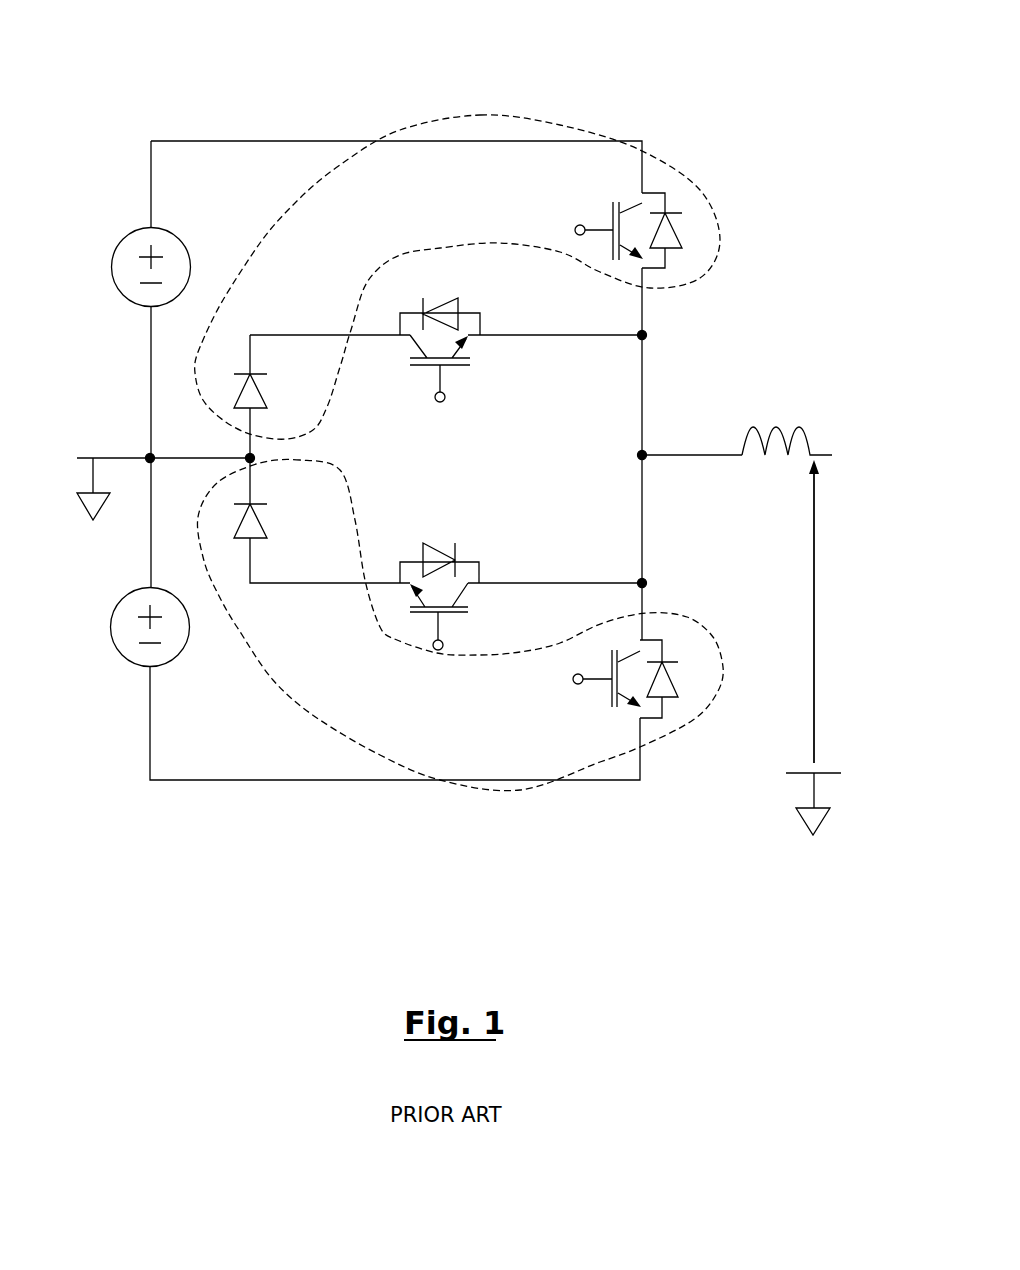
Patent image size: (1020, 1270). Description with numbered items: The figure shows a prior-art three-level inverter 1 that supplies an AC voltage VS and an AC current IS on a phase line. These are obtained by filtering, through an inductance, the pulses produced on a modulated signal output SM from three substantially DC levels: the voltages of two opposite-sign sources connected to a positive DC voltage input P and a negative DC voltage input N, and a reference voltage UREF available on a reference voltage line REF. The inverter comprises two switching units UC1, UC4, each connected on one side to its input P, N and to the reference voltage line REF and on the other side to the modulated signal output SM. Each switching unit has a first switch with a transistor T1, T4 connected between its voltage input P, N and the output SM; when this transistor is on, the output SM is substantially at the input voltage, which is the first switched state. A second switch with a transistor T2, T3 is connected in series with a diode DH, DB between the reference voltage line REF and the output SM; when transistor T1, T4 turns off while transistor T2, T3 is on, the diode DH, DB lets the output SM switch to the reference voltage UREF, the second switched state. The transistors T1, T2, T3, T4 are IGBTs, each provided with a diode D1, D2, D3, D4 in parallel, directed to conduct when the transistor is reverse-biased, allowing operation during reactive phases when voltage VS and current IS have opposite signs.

The three-level inverter 1 is at (686, 96).
The positive DC voltage input P is at (396, 153).
The negative DC voltage input N is at (395, 723).
The reference voltage UREF is at (166, 447).
The reference voltage line REF is at (455, 661).
The AC voltage VS is at (827, 618).
The modulated signal output SM is at (645, 452).
The AC current IS is at (796, 415).
The diode DH is at (263, 396).
The diode DB is at (322, 520).
The transistor T1 is at (609, 231).
The diode D1 is at (674, 230).
The transistor T2 is at (443, 368).
The diode D2 is at (440, 304).
The transistor T3 is at (443, 616).
The diode D3 is at (439, 549).
The transistor T4 is at (607, 678).
The diode D4 is at (673, 679).
The switching unit UC1 is at (410, 130).
The switching unit UC4 is at (440, 785).